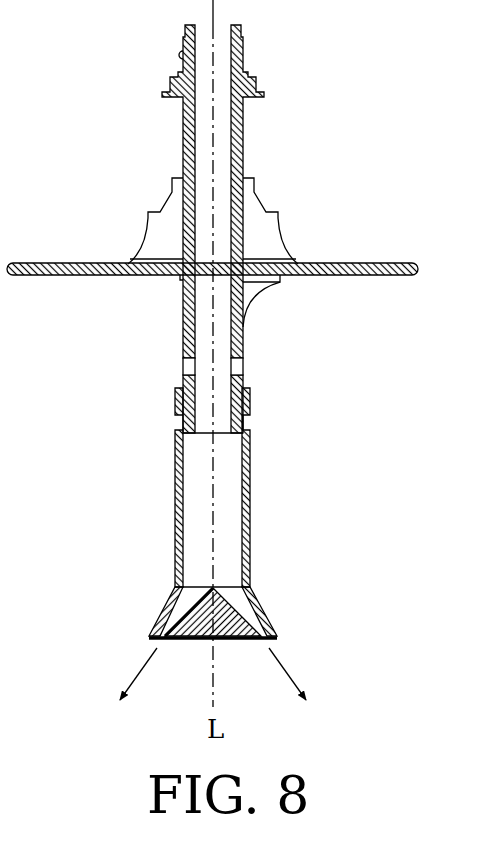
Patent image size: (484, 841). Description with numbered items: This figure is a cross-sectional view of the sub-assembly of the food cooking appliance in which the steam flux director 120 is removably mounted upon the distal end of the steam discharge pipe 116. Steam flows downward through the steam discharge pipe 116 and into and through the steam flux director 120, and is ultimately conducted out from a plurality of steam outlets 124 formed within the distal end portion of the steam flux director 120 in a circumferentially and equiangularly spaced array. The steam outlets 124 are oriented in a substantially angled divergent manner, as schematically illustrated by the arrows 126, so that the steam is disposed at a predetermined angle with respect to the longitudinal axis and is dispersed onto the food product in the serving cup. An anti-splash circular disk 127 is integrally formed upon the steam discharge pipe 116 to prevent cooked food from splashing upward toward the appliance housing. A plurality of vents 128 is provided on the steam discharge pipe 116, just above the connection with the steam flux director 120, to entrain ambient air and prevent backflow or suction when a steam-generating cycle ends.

The steam discharge pipe 116 is at (183, 323).
The anti-splash circular disk 127 is at (365, 263).
The vents 128 is at (243, 363).
The steam flux director 120 is at (250, 488).
The steam outlets 124 is at (183, 608).
The arrows 126 is at (211, 692).